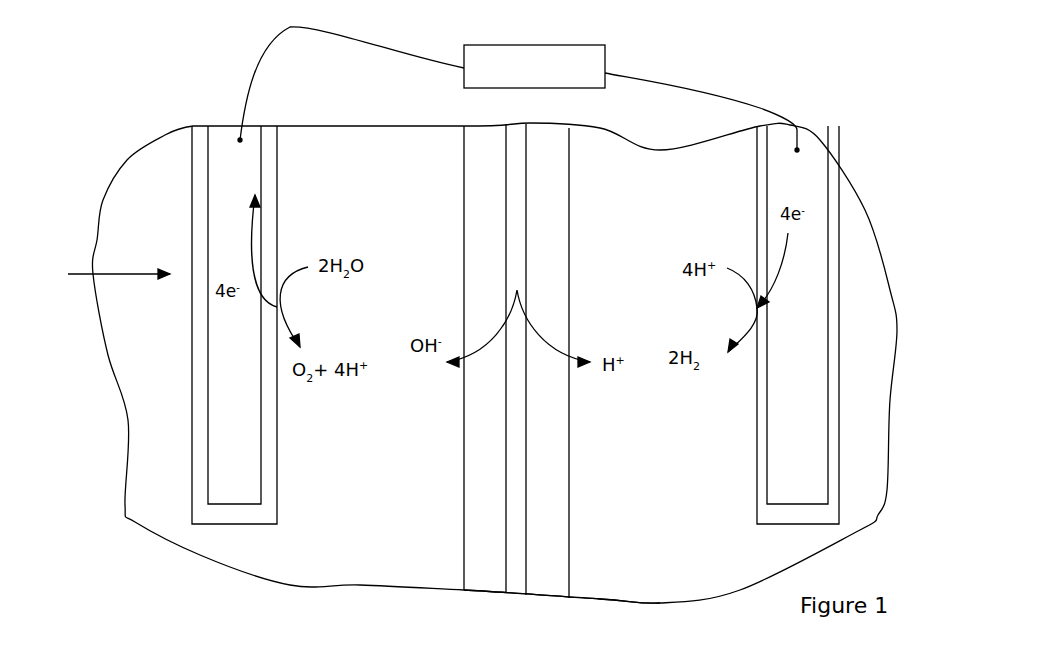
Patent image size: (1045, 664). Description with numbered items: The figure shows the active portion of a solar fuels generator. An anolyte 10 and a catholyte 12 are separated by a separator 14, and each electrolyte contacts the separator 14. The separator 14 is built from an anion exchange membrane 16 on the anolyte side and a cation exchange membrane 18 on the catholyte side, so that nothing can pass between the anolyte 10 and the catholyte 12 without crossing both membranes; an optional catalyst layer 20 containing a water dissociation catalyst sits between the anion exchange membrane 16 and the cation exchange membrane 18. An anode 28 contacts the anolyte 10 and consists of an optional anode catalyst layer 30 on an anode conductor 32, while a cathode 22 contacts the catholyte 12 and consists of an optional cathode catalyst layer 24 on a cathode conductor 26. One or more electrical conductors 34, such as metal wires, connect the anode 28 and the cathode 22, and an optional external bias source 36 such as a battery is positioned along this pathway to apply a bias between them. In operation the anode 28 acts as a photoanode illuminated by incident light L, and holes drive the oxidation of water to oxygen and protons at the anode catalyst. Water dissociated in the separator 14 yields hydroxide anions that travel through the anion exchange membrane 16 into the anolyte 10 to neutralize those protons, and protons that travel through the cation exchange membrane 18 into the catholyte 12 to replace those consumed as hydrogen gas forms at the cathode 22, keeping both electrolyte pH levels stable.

The anolyte 10 is at (297, 563).
The catholyte 12 is at (632, 587).
The separator 14 is at (442, 502).
The anion exchange membrane 16 is at (485, 255).
The cation exchange membrane 18 is at (570, 295).
The catalyst layer 20 is at (517, 253).
The cathode 22 is at (862, 337).
The cathode catalyst layer 24 is at (767, 517).
The cathode conductor 26 is at (777, 418).
The anode 28 is at (308, 460).
The anode catalyst layer 30 is at (197, 368).
The anode conductor 32 is at (225, 192).
The electrical conductor 34 is at (408, 58).
The external bias source 36 is at (563, 45).
The incident light L is at (78, 275).